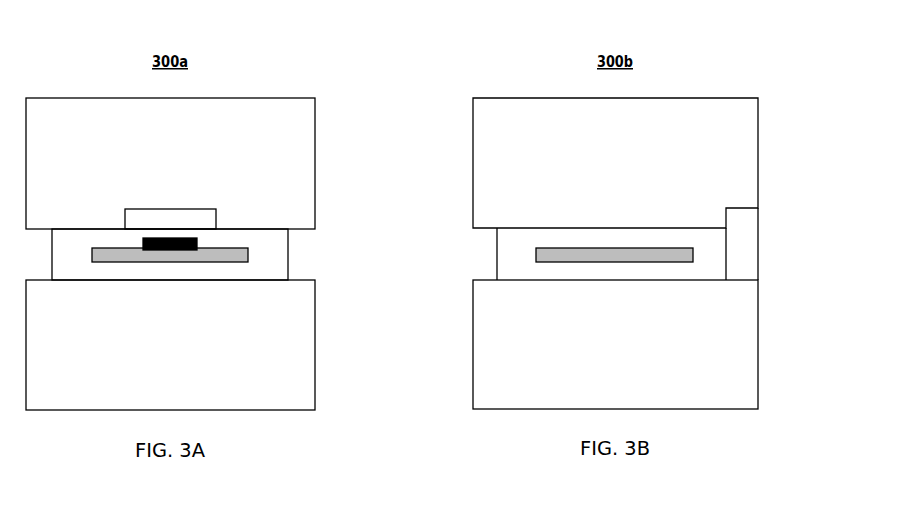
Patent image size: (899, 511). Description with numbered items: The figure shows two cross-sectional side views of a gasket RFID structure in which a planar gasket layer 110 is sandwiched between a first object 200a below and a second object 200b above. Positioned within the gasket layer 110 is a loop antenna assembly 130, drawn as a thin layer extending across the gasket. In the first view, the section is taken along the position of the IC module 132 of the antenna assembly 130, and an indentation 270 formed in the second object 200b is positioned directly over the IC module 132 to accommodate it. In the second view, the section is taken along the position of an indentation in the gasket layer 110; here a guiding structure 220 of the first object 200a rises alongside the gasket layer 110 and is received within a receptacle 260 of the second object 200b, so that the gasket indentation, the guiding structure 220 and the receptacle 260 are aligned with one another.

In FIG. 3A, the second object 200b is at (305, 98).
In FIG. 3B, the second object 200b is at (480, 98).
In FIG. 3A, the first object 200a is at (303, 412).
In FIG. 3B, the first object 200a is at (482, 412).
In FIG. 3A, the indentation 270 is at (153, 208).
In FIG. 3A, the antenna assembly 130 is at (252, 247).
In FIG. 3B, the antenna assembly 130 is at (535, 247).
In FIG. 3A, the gasket layer 110 is at (292, 263).
In FIG. 3B, the gasket layer 110 is at (495, 263).
In FIG. 3A, the IC module 132 is at (143, 253).
In FIG. 3B, the receptacle 260 is at (735, 208).
In FIG. 3B, the guiding structure 220 is at (747, 253).